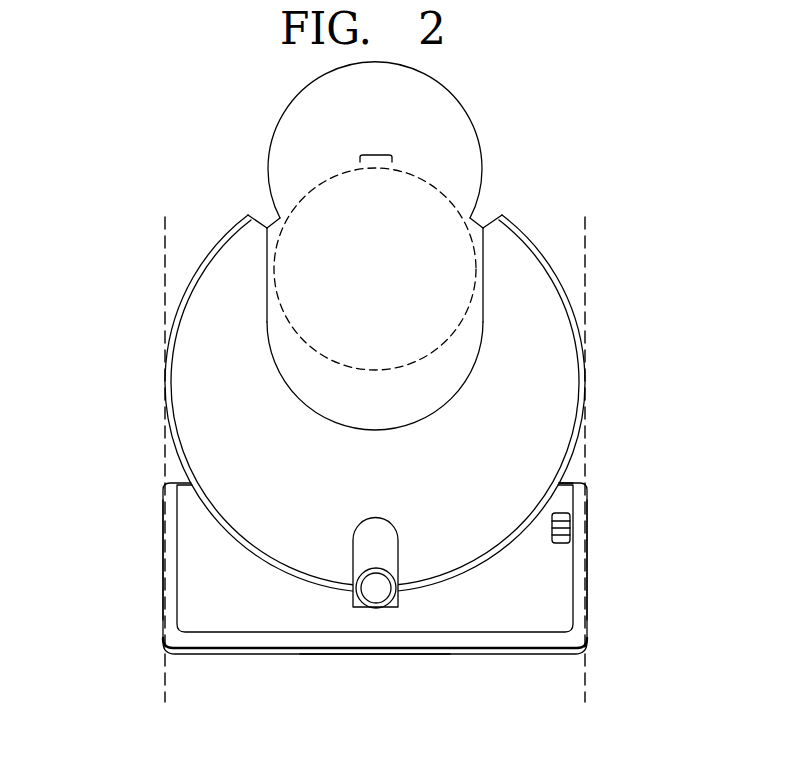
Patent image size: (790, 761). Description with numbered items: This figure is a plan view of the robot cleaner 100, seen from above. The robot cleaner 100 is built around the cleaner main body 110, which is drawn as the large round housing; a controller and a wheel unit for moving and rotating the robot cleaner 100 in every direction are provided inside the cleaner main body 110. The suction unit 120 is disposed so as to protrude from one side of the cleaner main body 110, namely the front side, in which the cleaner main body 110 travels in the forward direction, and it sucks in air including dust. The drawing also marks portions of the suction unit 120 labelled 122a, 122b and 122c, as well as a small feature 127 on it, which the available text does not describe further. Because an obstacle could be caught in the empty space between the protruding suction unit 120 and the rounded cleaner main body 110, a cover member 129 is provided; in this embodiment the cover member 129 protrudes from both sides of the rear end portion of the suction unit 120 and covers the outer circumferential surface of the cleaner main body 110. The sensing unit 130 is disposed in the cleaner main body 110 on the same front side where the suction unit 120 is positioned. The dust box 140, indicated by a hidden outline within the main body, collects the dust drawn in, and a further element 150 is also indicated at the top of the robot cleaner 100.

The robot cleaner 100 is at (184, 143).
The cleaner main body 110 is at (553, 378).
The suction unit 120 is at (533, 593).
The base bottom portion 122a is at (482, 657).
The base right side portion 122b is at (587, 555).
The base left side portion 122c is at (162, 555).
The switch 127 is at (565, 520).
The cover member 129 is at (567, 477).
The sensing unit 130 is at (365, 552).
The dust box 140 is at (440, 190).
The head 150 is at (322, 172).